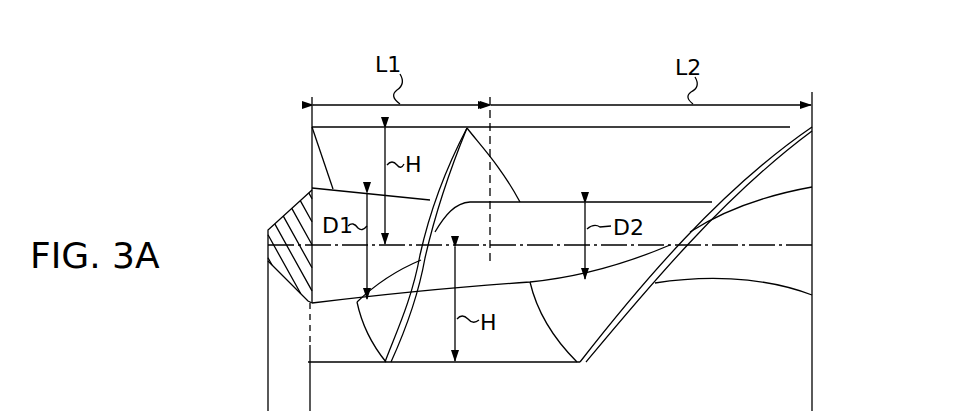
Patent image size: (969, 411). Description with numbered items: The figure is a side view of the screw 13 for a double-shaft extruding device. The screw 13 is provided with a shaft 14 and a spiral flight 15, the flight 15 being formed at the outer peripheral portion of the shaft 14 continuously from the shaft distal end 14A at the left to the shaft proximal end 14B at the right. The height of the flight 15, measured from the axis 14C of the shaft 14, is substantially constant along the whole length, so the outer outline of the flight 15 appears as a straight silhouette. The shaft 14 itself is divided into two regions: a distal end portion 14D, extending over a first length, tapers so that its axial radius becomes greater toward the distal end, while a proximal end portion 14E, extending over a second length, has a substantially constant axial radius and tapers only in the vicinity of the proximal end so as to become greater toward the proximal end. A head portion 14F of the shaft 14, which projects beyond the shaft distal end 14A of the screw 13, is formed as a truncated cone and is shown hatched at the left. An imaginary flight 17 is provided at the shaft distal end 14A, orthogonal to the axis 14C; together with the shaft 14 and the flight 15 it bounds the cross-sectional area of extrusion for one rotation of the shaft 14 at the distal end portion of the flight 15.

The screw 13 is at (613, 53).
The shaft 14 is at (565, 215).
The spiral flight 15 is at (490, 163).
The shaft distal end 14A is at (303, 200).
The shaft proximal end 14B is at (815, 215).
The axis of the shaft 14C is at (622, 247).
The distal end portion 14D is at (352, 263).
The proximal end portion 14E is at (663, 218).
The head portion 14F is at (276, 216).
The imaginary flight 17 is at (307, 345).